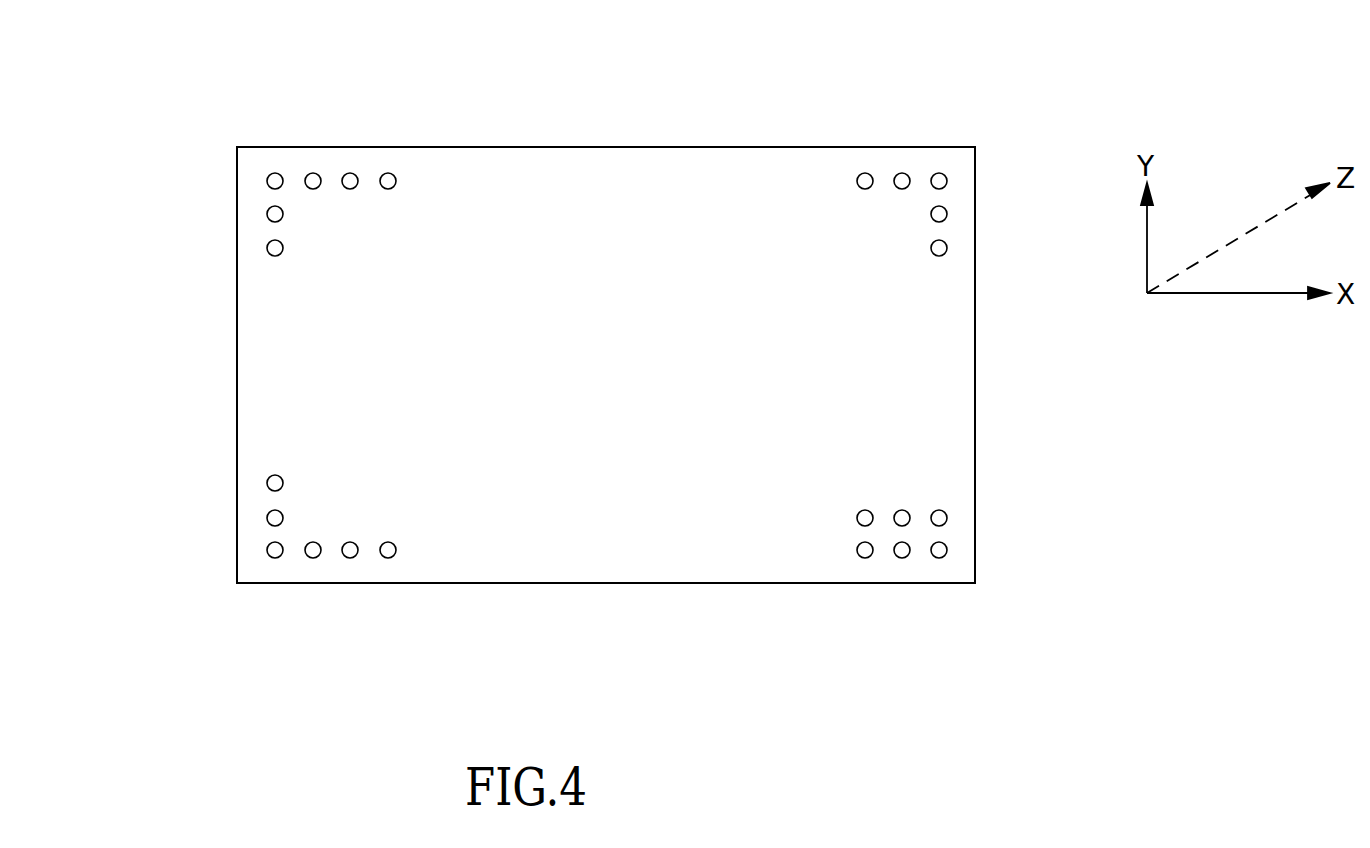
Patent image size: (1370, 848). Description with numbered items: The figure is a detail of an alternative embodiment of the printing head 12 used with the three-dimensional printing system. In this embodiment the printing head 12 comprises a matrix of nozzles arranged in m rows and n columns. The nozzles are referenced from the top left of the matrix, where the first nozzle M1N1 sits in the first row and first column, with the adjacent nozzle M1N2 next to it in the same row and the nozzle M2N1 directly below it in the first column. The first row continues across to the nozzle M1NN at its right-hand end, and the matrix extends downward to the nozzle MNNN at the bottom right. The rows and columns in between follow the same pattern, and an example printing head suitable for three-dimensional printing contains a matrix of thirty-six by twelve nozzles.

The printing head 12 is at (678, 147).
The nozzle M1N1 is at (275, 173).
The nozzle M1N2 is at (314, 173).
The nozzle M2N1 is at (267, 212).
The nozzle M1NN is at (938, 173).
The nozzle MNNN is at (939, 558).